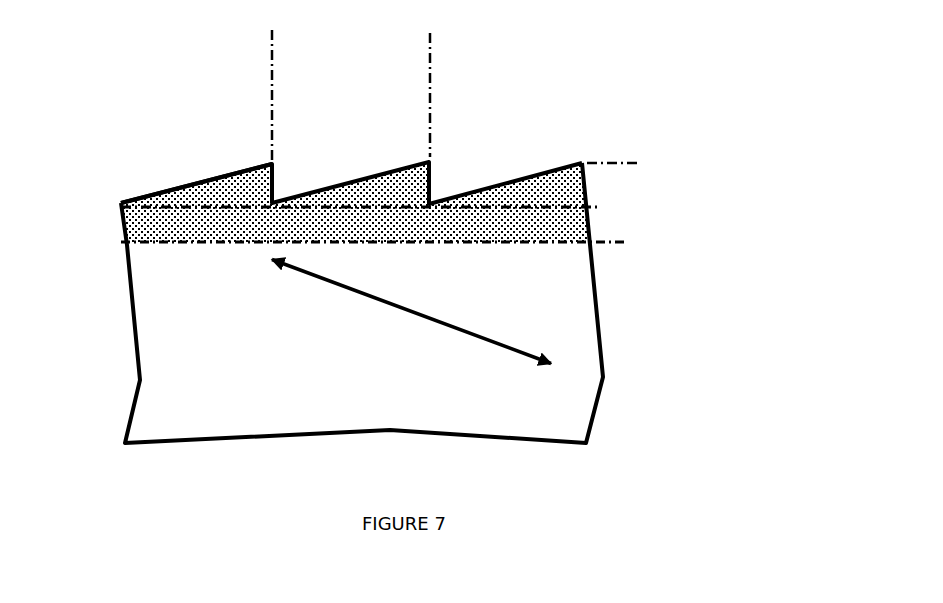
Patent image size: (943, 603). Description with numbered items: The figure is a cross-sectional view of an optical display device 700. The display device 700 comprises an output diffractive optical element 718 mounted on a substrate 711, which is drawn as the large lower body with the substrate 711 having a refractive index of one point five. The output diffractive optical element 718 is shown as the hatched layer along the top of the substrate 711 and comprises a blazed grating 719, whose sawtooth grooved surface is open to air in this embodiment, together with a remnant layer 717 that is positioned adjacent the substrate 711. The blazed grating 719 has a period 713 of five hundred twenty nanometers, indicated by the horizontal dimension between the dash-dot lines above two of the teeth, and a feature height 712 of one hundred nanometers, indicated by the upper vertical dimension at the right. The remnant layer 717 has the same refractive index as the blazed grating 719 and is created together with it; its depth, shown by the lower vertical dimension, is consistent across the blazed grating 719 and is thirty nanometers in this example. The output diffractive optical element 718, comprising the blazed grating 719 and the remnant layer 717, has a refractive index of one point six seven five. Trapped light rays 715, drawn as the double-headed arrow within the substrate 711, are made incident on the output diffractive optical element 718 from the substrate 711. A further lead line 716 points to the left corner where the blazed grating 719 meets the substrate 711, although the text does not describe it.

The optical display device 700 is at (422, 236).
The substrate 711 is at (168, 400).
The feature height 712 is at (618, 169).
The period 713 is at (424, 54).
The trapped light rays 715 is at (553, 352).
The leading edge corner 716 is at (143, 220).
The remnant layer 717 is at (618, 213).
The output diffractive optical element 718 is at (705, 193).
The blazed grating 719 is at (197, 183).